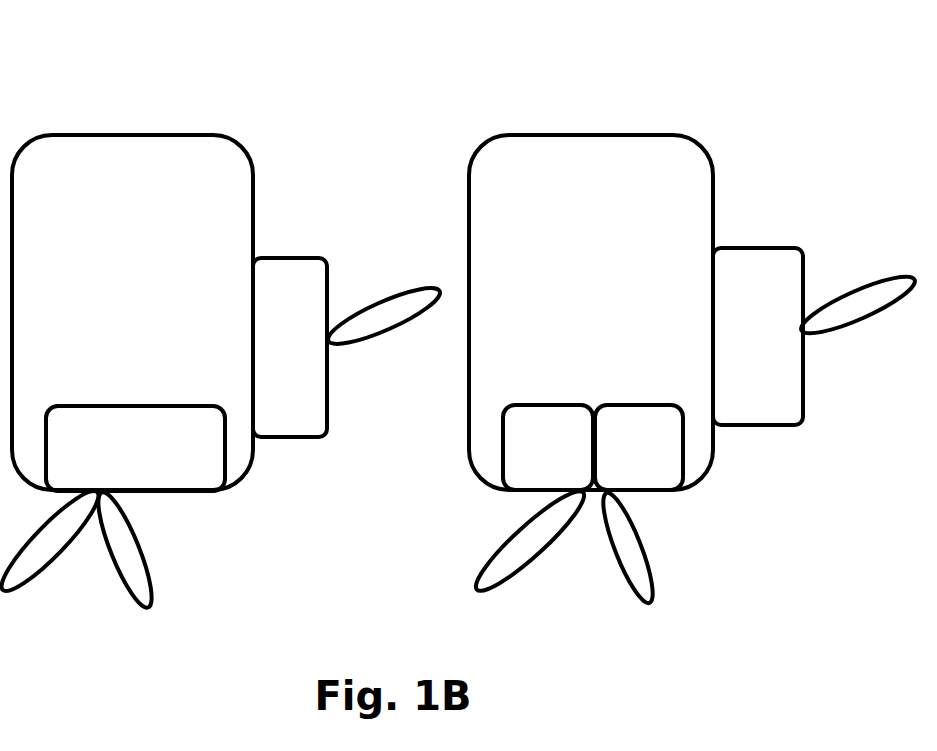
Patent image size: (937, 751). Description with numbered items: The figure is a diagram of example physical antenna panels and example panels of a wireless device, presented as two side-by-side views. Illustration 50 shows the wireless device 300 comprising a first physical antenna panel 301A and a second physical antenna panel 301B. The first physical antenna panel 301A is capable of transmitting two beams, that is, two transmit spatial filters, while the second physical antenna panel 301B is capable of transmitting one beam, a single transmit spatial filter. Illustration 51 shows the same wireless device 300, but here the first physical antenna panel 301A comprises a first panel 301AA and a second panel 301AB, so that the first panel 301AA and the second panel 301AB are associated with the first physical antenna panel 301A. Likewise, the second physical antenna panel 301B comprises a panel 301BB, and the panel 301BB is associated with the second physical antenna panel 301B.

The illustration 50 is at (97, 115).
The illustration 51 is at (564, 118).
The wireless device 300 is at (362, 312).
The first physical antenna panel 301A is at (112, 509).
The second physical antenna panel 301B is at (349, 347).
The first panel 301AA is at (530, 503).
The second panel 301AB is at (638, 506).
The panel 301BB is at (816, 336).